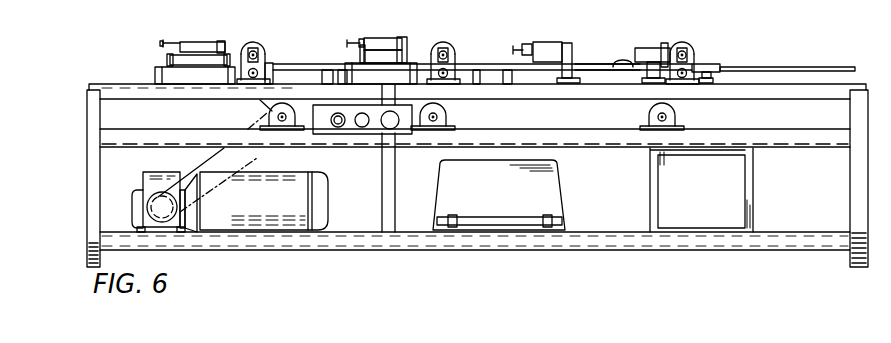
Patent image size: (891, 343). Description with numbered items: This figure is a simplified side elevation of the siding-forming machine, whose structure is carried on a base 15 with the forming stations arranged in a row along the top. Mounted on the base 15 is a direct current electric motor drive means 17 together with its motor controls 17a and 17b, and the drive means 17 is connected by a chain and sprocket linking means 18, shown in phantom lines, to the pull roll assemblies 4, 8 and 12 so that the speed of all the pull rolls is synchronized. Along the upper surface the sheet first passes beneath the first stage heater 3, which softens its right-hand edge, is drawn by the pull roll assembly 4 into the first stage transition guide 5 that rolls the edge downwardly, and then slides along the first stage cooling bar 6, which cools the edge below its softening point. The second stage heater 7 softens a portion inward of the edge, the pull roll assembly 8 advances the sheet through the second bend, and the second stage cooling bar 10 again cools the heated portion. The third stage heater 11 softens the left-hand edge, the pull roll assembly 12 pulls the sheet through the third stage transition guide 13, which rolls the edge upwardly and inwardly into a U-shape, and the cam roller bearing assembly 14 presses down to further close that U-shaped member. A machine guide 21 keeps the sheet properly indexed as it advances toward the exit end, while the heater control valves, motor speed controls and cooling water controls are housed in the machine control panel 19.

The first stage heater 3 is at (186, 40).
The pull roll assembly 4 is at (247, 44).
The first stage transition guide 5 is at (270, 62).
The first stage cooling bar 6 is at (318, 64).
The second stage heater 7 is at (361, 38).
The pull roll assembly 8 is at (437, 45).
The second stage cooling bar 10 is at (585, 64).
The third stage heater 11 is at (537, 44).
The pull roll assembly 12 is at (686, 45).
The third stage transition guide 13 is at (619, 62).
The cam roller bearing assembly 14 is at (663, 43).
The base 15 is at (87, 100).
The direct current electric motor drive means 17 is at (333, 217).
The motor control 17a is at (565, 200).
The motor control 17b is at (745, 190).
The chain and sprocket linking means 18 is at (677, 100).
The machine control panel 19 is at (347, 131).
The machine guide 21 is at (757, 66).